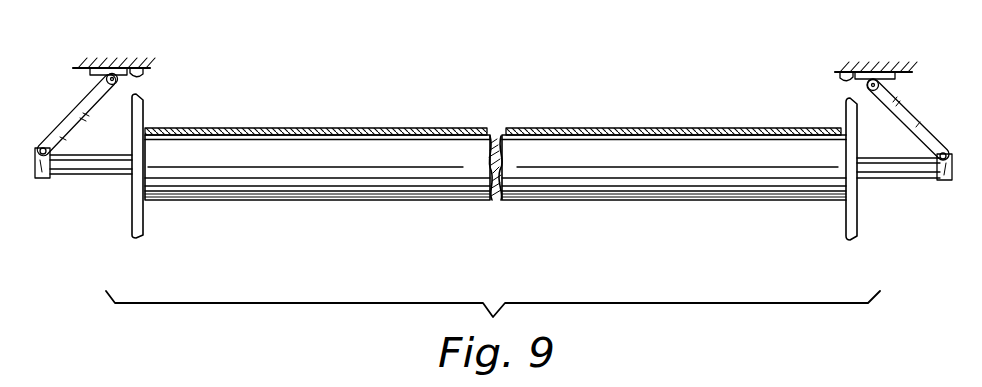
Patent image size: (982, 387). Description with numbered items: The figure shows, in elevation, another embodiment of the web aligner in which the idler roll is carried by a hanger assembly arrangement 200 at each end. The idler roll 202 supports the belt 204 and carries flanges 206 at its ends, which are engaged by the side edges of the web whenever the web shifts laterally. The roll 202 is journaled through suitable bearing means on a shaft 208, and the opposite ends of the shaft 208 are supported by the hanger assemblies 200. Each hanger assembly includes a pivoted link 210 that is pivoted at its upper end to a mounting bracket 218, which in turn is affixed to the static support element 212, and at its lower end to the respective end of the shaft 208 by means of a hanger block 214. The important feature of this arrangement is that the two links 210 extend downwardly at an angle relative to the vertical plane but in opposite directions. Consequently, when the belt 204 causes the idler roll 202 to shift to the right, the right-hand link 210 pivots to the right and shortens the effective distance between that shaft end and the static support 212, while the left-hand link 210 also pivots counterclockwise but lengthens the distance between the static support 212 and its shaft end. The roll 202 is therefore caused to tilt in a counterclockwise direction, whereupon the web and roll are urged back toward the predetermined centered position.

The hanger assembly arrangement 200 is at (163, 82).
The idler roll 202 is at (366, 195).
The belt 204 is at (519, 107).
The flanges 206 is at (144, 104).
The shaft 208 is at (108, 178).
The pivoted links 210 is at (78, 117).
The static support element 212 is at (110, 65).
The hanger block 214 is at (43, 180).
The mounting bracket 218 is at (148, 68).